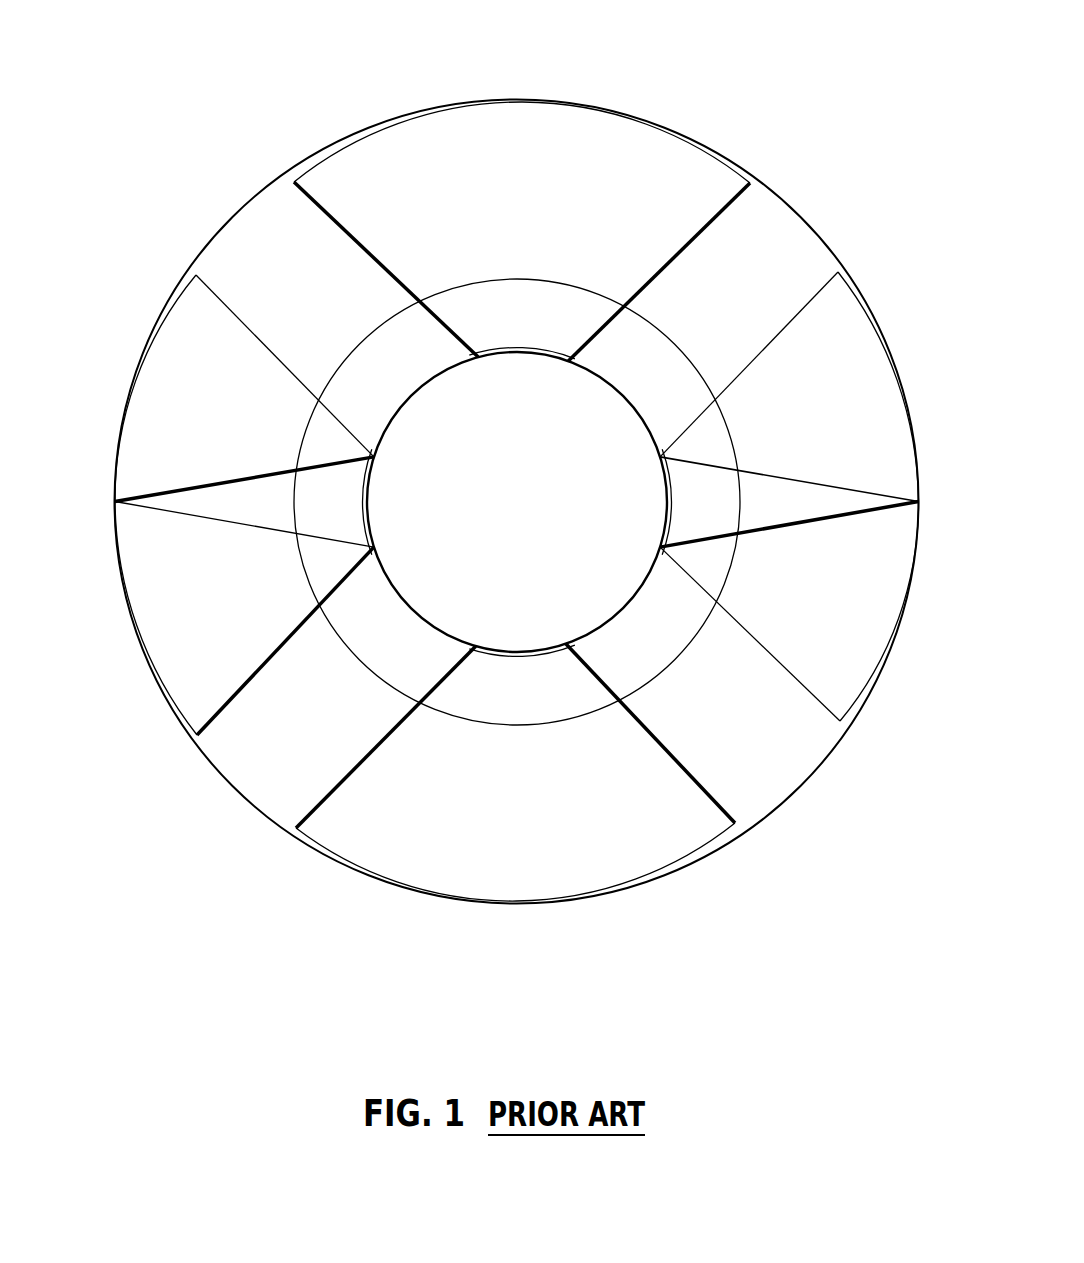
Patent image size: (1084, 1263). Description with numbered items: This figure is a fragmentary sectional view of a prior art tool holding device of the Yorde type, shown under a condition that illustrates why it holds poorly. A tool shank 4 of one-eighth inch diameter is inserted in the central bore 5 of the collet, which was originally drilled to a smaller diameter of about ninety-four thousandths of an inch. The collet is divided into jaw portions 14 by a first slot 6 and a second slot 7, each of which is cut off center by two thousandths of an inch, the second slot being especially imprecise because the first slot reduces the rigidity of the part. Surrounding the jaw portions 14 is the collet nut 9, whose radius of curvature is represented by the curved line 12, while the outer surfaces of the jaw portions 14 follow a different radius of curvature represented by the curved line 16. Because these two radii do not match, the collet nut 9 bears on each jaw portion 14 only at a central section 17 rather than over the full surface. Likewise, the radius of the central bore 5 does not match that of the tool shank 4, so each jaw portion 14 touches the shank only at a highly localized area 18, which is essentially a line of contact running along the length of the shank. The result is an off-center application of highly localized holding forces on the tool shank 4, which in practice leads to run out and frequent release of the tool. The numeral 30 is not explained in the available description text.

The tool shank 4 is at (415, 586).
The central bore 5 is at (519, 650).
The first slot 6 is at (790, 229).
The second slot 7 is at (774, 775).
The collet nut 9 is at (747, 172).
The curved line 12 is at (831, 242).
The jaw portions 14 is at (420, 141).
The curved line 16 is at (848, 280).
The central section 17 is at (520, 97).
The localized area 18 is at (662, 484).
The opening 30 is at (532, 345).